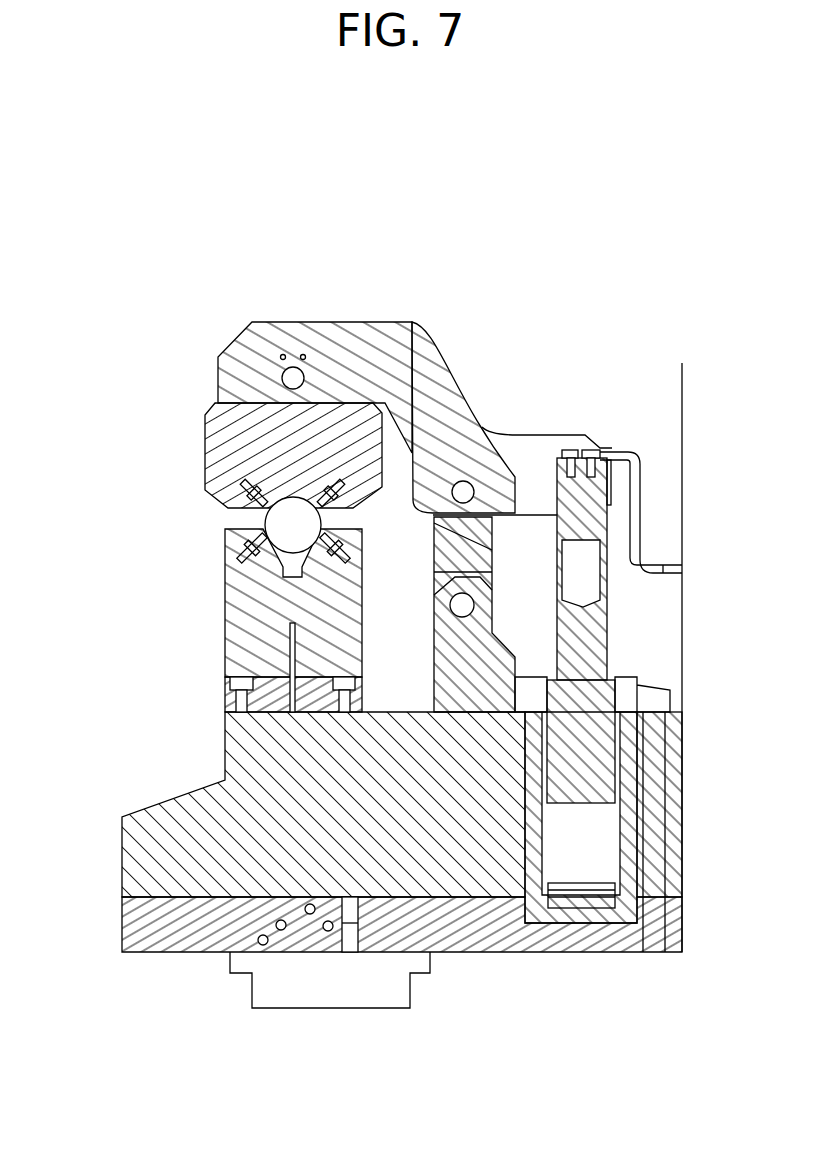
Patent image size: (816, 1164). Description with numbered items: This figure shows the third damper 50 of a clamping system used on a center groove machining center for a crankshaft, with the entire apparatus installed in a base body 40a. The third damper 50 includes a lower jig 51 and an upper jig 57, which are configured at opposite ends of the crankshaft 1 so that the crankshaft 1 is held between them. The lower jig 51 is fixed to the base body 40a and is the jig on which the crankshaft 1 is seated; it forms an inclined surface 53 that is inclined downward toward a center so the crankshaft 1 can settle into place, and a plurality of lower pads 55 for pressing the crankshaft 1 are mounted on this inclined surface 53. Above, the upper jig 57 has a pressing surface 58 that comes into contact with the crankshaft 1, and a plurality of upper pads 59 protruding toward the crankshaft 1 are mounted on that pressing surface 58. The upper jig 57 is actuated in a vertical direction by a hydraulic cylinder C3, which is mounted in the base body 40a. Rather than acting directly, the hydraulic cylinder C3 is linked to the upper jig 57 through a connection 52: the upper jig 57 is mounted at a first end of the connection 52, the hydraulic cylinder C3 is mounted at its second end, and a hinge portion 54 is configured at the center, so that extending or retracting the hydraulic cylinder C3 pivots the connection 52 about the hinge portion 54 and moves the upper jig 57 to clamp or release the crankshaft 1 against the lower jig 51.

The third damper 50 is at (436, 203).
The crankshaft 1 is at (288, 518).
The base body 40a is at (153, 852).
The lower jig 51 is at (252, 622).
The connection 52 is at (352, 342).
The inclined surface 53 is at (265, 517).
The hinge portion 54 is at (462, 605).
The lower pads 55 is at (350, 531).
The upper jig 57 is at (237, 437).
The pressing surface 58 is at (322, 515).
The upper pads 59 is at (245, 497).
The hydraulic cylinder C3 is at (588, 632).